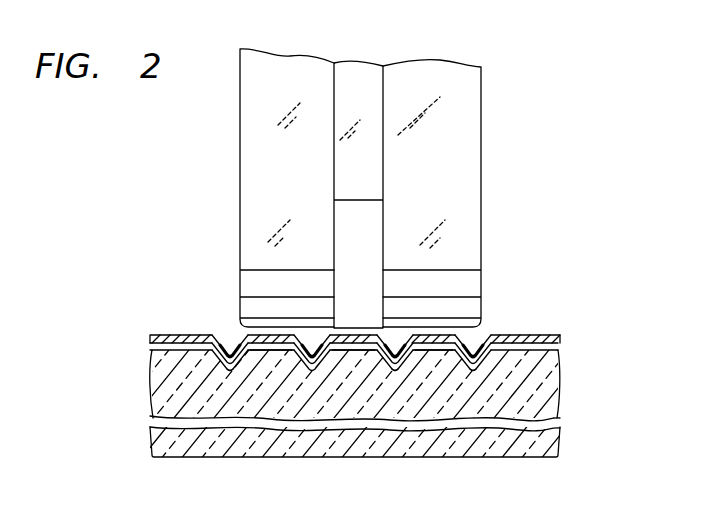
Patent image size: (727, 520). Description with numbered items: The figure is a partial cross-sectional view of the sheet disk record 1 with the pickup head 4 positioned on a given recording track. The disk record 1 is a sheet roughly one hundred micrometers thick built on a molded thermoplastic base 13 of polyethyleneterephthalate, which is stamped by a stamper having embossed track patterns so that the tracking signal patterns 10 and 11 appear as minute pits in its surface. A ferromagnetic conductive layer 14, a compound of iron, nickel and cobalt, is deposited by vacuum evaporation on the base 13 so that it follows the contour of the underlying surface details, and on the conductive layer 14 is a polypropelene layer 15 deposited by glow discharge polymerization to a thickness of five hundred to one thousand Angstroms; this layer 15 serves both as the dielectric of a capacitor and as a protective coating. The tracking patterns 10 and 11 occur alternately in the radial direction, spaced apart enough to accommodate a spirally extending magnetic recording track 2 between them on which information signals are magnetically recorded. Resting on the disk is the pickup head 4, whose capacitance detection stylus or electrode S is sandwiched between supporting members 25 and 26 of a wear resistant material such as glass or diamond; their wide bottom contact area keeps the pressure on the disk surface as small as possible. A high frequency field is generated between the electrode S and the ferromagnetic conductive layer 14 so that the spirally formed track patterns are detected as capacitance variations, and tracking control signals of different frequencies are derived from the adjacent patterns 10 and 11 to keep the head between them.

The disk record 1 is at (376, 406).
The magnetic recording track 2 is at (262, 364).
The pickup head 4 is at (366, 188).
The tracking signal pattern 10 is at (275, 362).
The tracking signal pattern 11 is at (228, 357).
The molded thermoplastic base 13 is at (560, 389).
The ferromagnetic conductive layer 14 is at (558, 347).
The polypropelene layer 15 is at (560, 337).
The supporting member 25 is at (250, 160).
The supporting member 26 is at (468, 97).
The capacitance detection stylus or electrode S is at (365, 185).